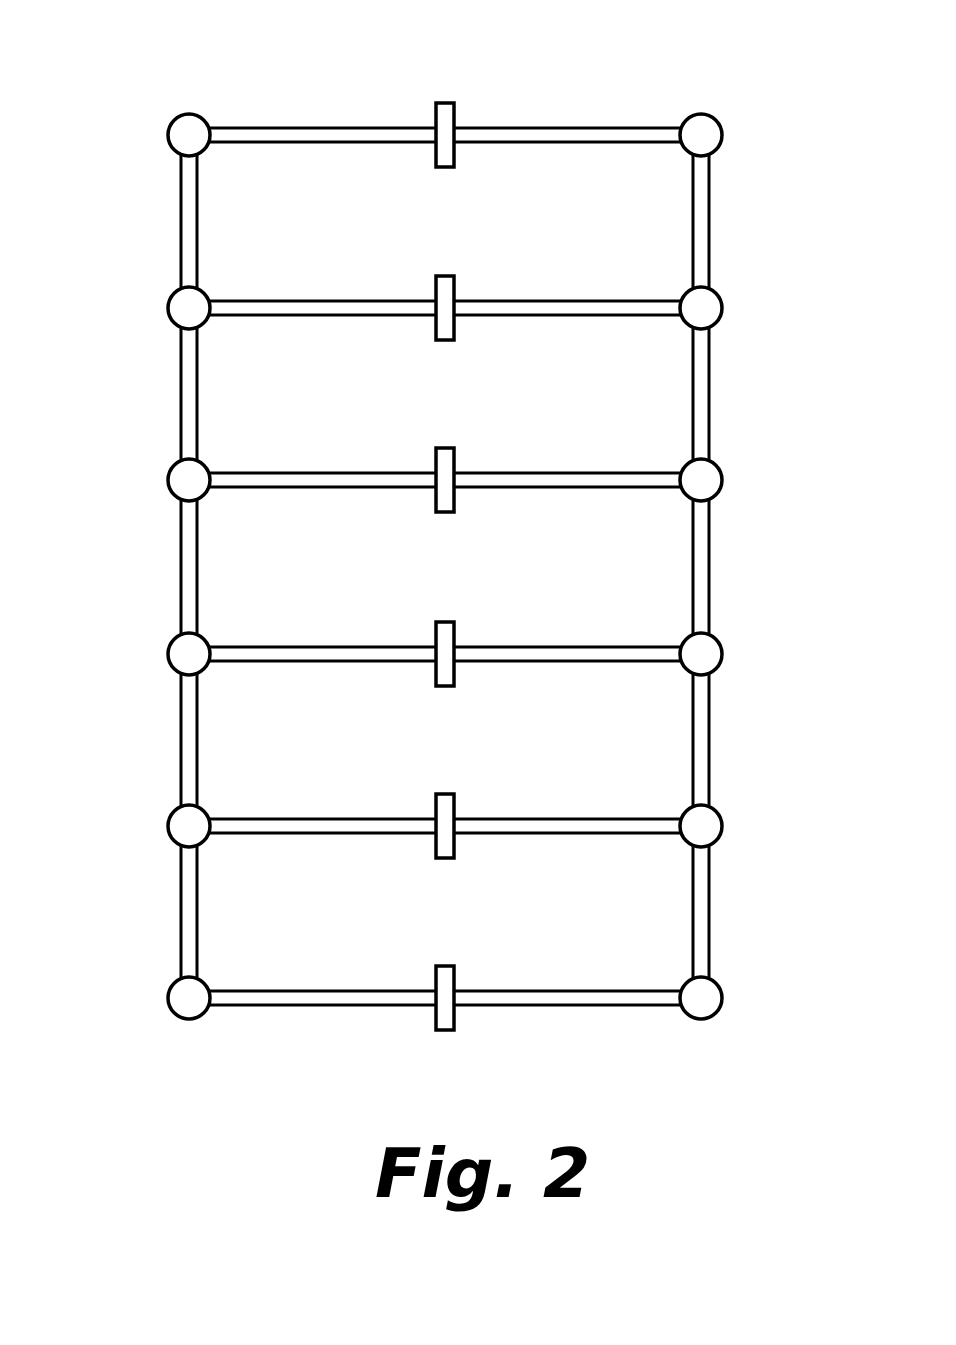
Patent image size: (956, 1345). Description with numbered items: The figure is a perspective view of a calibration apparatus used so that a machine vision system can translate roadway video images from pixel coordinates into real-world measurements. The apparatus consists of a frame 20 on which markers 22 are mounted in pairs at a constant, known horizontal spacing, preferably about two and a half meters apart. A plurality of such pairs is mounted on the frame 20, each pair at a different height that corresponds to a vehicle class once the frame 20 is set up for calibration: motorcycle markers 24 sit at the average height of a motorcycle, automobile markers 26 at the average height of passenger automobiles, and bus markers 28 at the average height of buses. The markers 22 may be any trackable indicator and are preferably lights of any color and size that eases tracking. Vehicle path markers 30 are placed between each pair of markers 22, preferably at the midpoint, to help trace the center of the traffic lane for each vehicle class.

The frame 20 is at (577, 50).
The markers 22 is at (158, 280).
The motorcycle markers 24 is at (206, 843).
The automobile markers 26 is at (206, 670).
The bus markers 28 is at (205, 325).
The vehicle path markers 30 is at (456, 160).